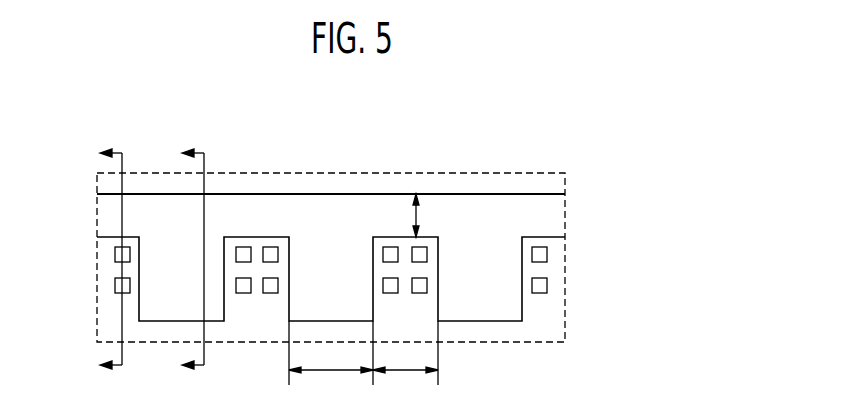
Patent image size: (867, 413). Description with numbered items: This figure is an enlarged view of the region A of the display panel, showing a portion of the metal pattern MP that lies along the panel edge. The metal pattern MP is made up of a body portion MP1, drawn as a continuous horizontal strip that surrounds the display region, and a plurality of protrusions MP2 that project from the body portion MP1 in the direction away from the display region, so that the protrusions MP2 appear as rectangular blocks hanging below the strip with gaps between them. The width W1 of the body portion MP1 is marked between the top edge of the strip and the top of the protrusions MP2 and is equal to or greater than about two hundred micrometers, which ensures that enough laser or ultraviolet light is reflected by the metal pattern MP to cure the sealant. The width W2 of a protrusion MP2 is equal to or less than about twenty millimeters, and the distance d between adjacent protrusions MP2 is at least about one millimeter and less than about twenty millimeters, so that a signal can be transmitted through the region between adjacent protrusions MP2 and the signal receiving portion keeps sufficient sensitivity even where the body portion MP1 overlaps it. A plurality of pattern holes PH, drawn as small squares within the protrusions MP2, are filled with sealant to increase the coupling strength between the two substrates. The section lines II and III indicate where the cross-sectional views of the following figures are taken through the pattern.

The region A is at (528, 173).
The metal pattern MP is at (648, 197).
The body portion MP1 is at (543, 213).
The protrusions MP2 is at (505, 270).
The pattern holes PH is at (270, 300).
The width of the body portion W1 is at (405, 215).
The width of the protrusions W2 is at (331, 383).
The distance between adjacent protrusions d is at (405, 383).
The line II- II is at (182, 258).
The line III-III' III is at (99, 258).